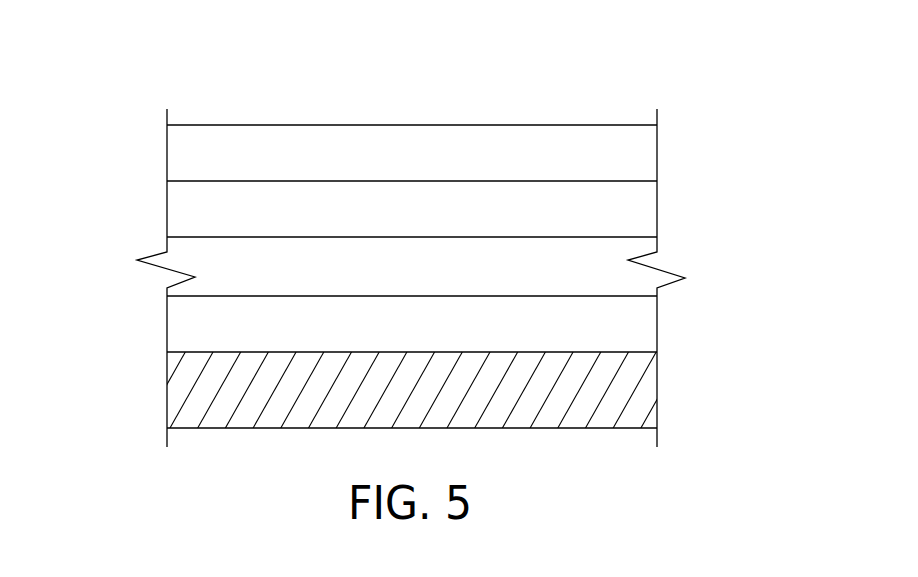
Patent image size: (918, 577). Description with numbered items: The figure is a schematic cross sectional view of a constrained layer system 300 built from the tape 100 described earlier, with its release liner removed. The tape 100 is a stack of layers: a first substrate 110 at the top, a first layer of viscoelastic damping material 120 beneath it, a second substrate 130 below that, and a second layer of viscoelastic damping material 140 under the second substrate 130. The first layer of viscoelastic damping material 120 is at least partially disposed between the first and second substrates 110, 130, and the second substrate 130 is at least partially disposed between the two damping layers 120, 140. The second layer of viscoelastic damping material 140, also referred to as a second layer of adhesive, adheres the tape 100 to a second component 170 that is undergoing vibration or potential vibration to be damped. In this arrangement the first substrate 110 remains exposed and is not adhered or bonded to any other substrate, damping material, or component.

The constrained layer system 300 is at (85, 90).
The tape 100 is at (783, 123).
The first substrate 110 is at (645, 155).
The first layer of viscoelastic damping material 120 is at (640, 215).
The second substrate 130 is at (633, 278).
The second layer of viscoelastic damping material 140 is at (637, 322).
The second component 170 is at (637, 383).